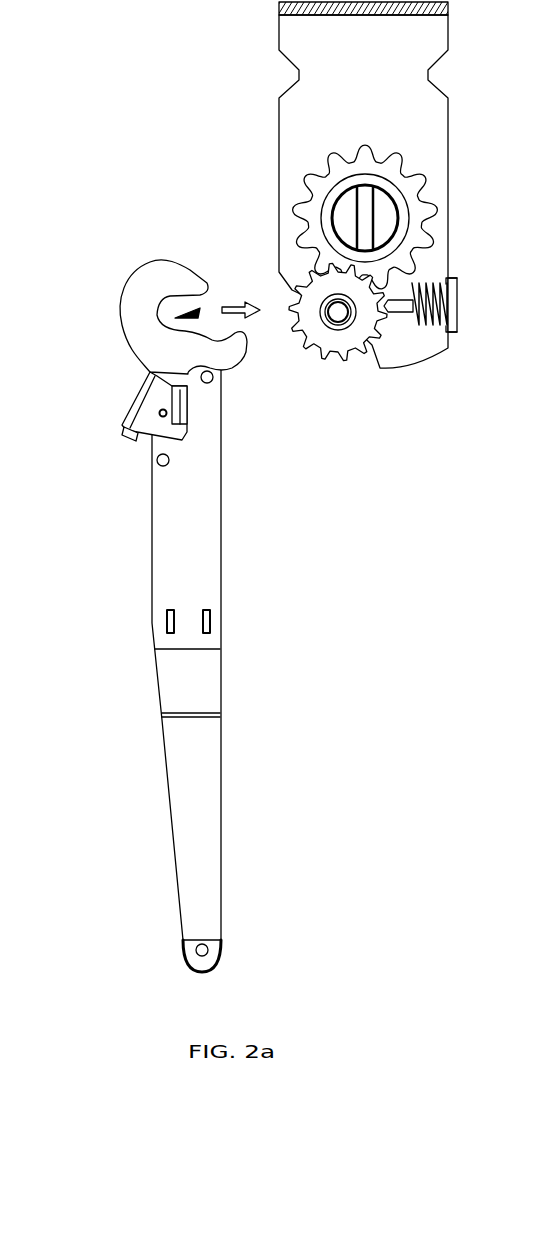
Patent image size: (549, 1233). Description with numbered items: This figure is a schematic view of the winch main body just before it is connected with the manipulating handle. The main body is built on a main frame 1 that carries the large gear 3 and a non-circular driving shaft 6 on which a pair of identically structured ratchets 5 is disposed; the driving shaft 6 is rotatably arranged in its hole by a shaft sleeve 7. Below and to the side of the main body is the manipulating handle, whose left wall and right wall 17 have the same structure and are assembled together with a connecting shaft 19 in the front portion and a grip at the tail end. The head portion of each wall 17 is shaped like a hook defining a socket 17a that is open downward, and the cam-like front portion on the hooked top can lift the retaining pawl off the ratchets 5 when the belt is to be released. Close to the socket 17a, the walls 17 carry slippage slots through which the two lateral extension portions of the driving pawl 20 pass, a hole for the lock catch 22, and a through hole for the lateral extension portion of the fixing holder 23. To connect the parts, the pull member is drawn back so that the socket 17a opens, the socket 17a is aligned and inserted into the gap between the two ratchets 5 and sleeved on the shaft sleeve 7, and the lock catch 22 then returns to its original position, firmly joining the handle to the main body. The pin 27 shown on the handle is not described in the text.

The main frame 1 is at (423, 115).
The large gear 3 is at (418, 237).
The ratchets 5 is at (332, 347).
The driving shaft 6 is at (342, 312).
The shaft sleeve 7 is at (348, 320).
The left wall and right wall 17 is at (210, 570).
The socket 17a is at (199, 310).
The connecting shaft 19 is at (218, 385).
The driving pawl 20 is at (187, 405).
The lock catch 22 is at (218, 353).
The fixing holder 23 is at (167, 622).
The pin 27 is at (158, 413).